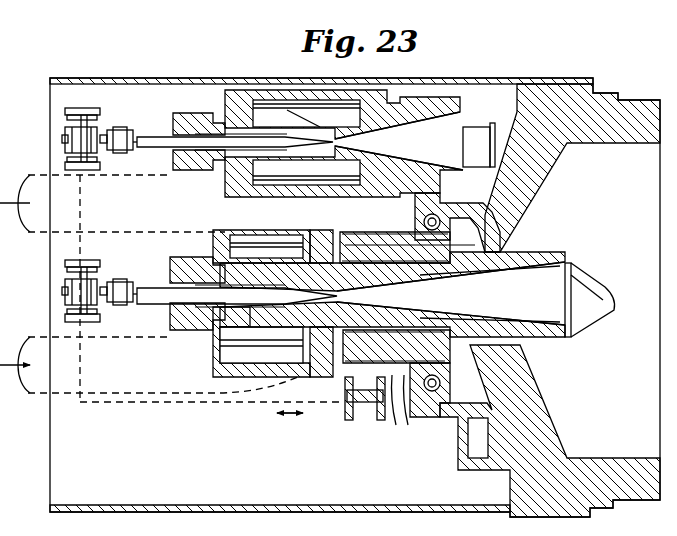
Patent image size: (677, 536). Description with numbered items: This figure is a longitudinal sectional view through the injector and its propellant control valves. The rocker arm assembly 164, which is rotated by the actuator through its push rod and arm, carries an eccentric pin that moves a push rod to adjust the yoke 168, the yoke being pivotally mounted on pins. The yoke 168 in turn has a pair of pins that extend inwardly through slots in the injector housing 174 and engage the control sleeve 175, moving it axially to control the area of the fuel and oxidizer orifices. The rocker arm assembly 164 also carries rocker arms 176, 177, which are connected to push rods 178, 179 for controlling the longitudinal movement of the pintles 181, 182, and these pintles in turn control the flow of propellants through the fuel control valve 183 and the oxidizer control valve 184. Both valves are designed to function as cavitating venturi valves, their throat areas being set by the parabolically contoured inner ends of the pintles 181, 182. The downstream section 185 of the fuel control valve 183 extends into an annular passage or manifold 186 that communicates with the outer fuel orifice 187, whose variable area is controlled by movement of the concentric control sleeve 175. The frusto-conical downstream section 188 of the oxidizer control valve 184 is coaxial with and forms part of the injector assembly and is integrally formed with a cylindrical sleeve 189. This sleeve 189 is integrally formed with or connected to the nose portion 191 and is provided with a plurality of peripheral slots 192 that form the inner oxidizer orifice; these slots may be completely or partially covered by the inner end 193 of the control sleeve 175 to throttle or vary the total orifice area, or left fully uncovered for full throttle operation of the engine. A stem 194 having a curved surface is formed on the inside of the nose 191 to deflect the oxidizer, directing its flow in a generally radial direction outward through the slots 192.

The rocker arm assembly 164 is at (121, 400).
The yoke 168 is at (346, 412).
The injector housing 174 is at (406, 414).
The control sleeve 175 is at (503, 364).
The rocker arm 176 is at (99, 109).
The rocker arm 177 is at (100, 264).
The push rod 178 is at (101, 148).
The push rod 179 is at (101, 302).
The pintle 181 is at (155, 136).
The pintle 182 is at (153, 287).
The fuel control valve 183 is at (226, 193).
The oxidizer control valve 184 is at (213, 368).
The downstream section 185 is at (436, 152).
The annular passage or manifold 186 is at (476, 132).
The outer fuel orifice 187 is at (507, 238).
The frusto-conical downstream section 188 is at (480, 307).
The cylindrical sleeve 189 is at (553, 330).
The nose portion 191 is at (604, 290).
The peripheral slots 192 is at (575, 262).
The inner end 193 is at (552, 265).
The stem 194 is at (550, 300).